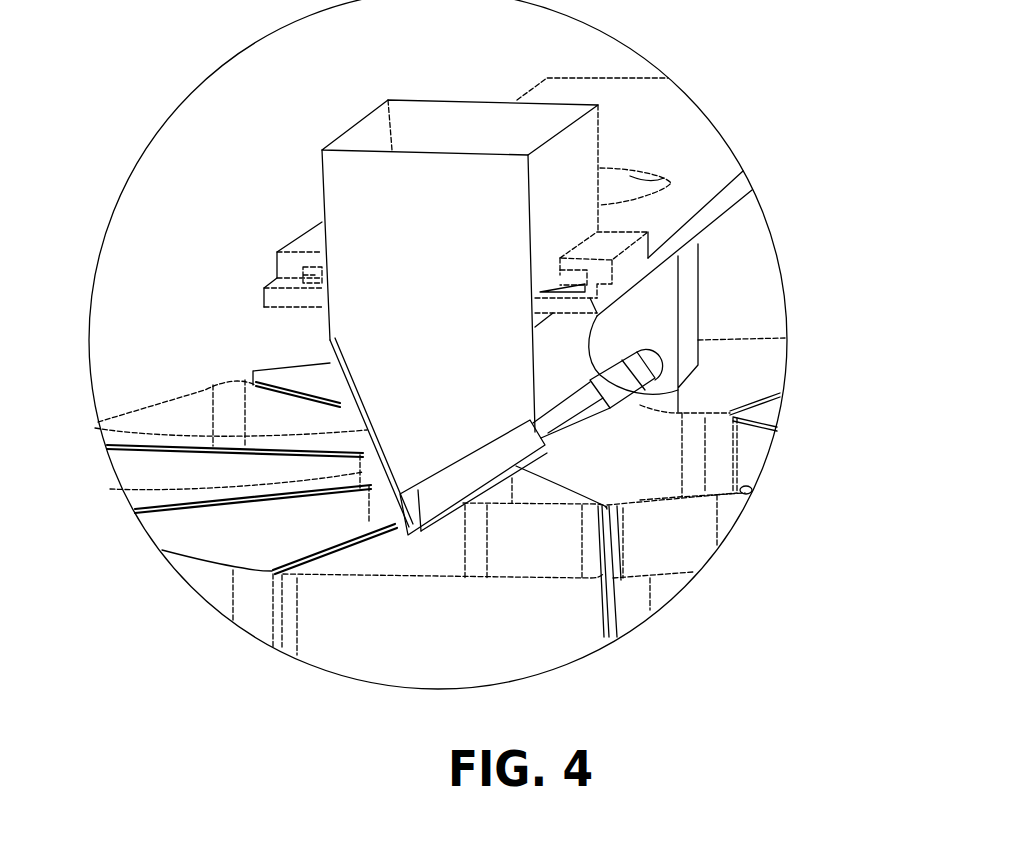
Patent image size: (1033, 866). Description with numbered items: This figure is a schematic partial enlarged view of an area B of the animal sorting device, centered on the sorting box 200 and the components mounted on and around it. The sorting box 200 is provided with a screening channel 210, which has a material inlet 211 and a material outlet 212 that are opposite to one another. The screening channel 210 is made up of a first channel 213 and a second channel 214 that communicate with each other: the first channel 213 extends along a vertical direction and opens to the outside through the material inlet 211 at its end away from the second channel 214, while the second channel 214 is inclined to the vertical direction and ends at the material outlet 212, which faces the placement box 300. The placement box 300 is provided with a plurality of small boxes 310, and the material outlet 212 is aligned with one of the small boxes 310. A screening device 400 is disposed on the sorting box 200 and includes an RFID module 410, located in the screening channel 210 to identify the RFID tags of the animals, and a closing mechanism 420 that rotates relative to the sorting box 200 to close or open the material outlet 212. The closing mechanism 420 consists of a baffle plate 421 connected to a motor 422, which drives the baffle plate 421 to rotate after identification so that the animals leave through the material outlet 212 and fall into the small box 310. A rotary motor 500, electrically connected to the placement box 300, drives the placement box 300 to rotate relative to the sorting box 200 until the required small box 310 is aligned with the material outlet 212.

The sorting box 200 is at (353, 217).
The screening channel 210 is at (360, 140).
The material inlet 211 is at (402, 120).
The first channel 213 is at (455, 124).
The second channel 214 is at (366, 396).
The material outlet 212 is at (610, 508).
The placement box 300 is at (170, 410).
The small box 310 is at (742, 362).
The screening device 400 is at (112, 430).
The RFID module 410 is at (132, 490).
The closing mechanism 420 is at (400, 493).
The baffle plate 421 is at (477, 502).
The motor 422 is at (735, 423).
The rotary motor 500 is at (668, 178).
The area B is at (653, 63).